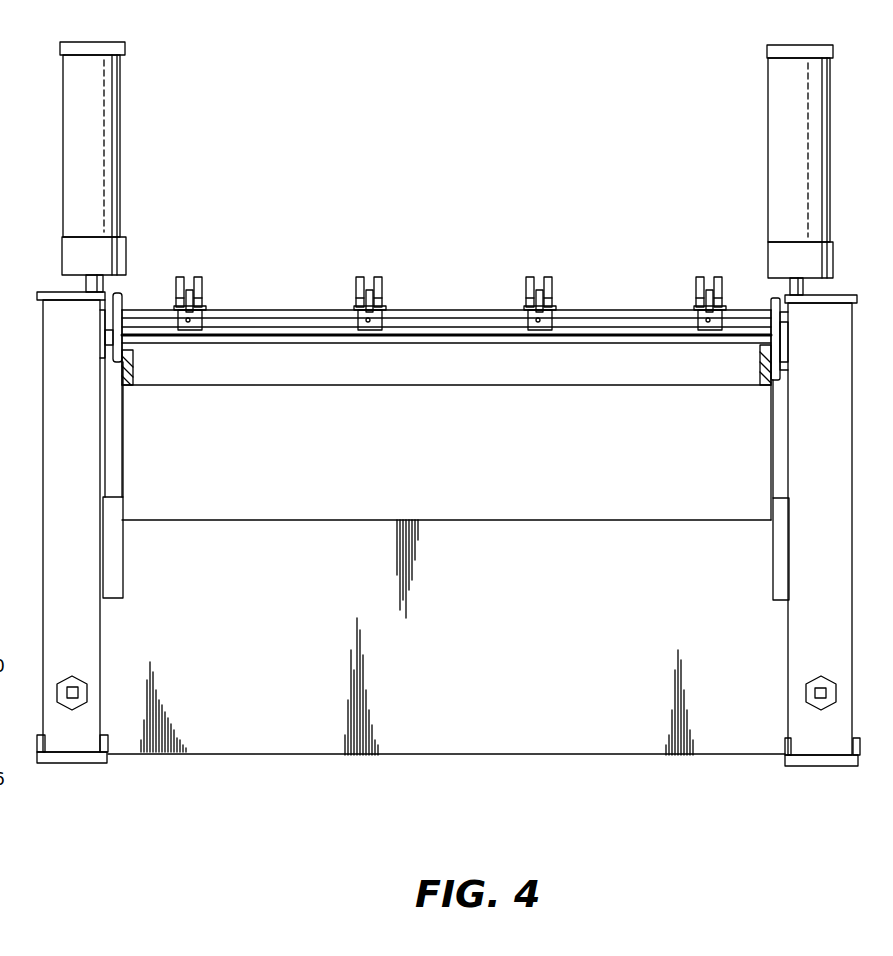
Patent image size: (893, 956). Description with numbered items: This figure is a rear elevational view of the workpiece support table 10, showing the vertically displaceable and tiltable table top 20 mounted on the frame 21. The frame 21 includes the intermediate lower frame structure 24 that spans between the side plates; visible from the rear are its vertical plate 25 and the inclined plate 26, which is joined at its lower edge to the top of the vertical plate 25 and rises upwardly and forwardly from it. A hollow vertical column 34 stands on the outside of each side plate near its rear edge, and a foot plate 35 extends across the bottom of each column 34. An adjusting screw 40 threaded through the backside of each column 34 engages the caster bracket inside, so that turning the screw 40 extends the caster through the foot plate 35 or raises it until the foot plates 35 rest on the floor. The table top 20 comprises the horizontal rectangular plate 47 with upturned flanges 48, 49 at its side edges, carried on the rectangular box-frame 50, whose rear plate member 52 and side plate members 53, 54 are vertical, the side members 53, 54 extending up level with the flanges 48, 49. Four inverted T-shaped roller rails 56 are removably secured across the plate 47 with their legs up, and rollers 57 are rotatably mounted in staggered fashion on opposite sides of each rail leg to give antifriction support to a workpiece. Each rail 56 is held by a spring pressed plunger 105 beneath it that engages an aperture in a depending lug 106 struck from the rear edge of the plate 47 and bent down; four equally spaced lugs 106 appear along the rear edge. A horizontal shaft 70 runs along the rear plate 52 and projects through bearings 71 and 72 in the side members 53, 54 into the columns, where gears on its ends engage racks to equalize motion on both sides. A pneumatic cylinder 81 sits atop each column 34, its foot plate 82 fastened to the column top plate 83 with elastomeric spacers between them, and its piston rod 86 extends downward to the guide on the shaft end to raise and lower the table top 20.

The workpiece support table 10 is at (462, 165).
The table top 20 is at (297, 307).
The frame 21 is at (862, 570).
The intermediate lower frame structure 24 is at (205, 745).
The vertical plate 25 is at (503, 735).
The inclined plate 26 is at (462, 520).
The hollow vertical column 34 is at (46, 468).
The foot plate 35 is at (62, 760).
The adjusting screw 40 is at (68, 693).
The rectangular plate 47 is at (460, 313).
The upturned flange 48 is at (124, 299).
The upturned flange 49 is at (770, 300).
The rectangular box-frame 50 is at (575, 372).
The rear plate member 52 is at (438, 368).
The side plate member 53 is at (768, 355).
The side plate member 54 is at (127, 380).
The inverted T-shaped roller rail 56 is at (200, 316).
The roller 57 is at (198, 278).
The shaft 70 is at (288, 340).
The bearing 71 is at (782, 368).
The bearing 72 is at (112, 350).
The pneumatic cylinder 81 is at (115, 162).
The foot plate 82 is at (124, 276).
The top plate 83 is at (37, 298).
The piston rod 86 is at (85, 288).
The spring pressed plunger 105 is at (190, 330).
The depending lug 106 is at (192, 335).